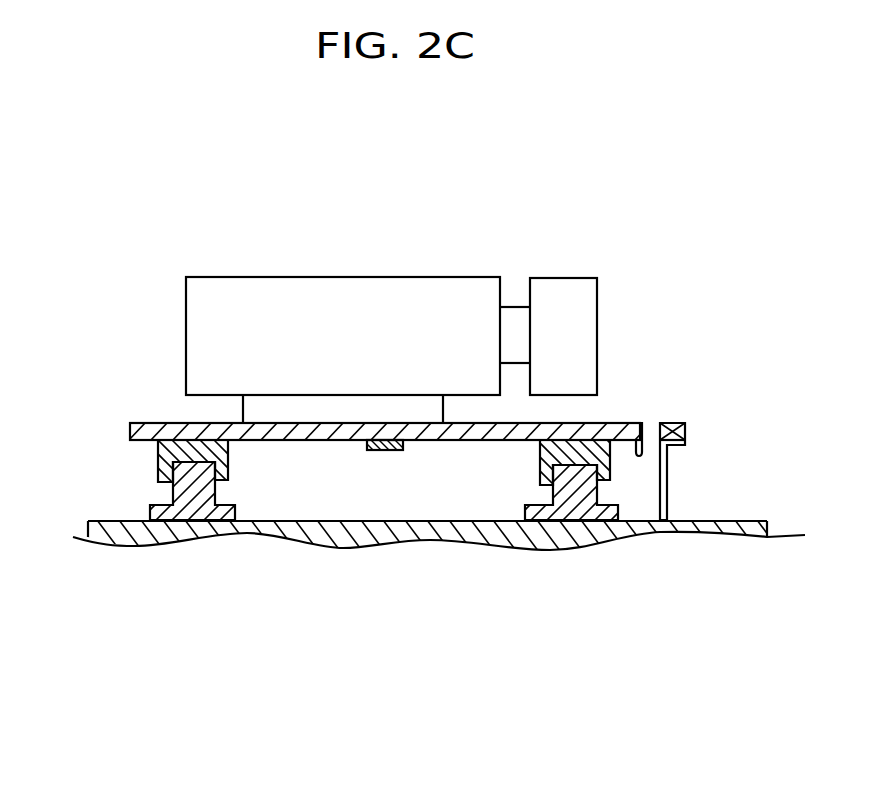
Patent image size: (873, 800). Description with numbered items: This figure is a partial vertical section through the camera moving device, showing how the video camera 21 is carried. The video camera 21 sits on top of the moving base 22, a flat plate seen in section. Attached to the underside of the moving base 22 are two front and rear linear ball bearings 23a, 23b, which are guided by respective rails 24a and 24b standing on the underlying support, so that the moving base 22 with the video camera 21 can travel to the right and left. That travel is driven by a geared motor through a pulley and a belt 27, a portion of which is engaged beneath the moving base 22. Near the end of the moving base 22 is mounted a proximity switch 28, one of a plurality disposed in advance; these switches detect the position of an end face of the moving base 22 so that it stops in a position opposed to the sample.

The video camera 21 is at (217, 285).
The moving base 22 is at (203, 428).
The linear ball bearing 23a is at (160, 450).
The linear ball bearing 23b is at (612, 460).
The rail 24a is at (175, 500).
The rail 24b is at (573, 509).
The belt 27 is at (367, 442).
The proximity switch 28 is at (673, 423).